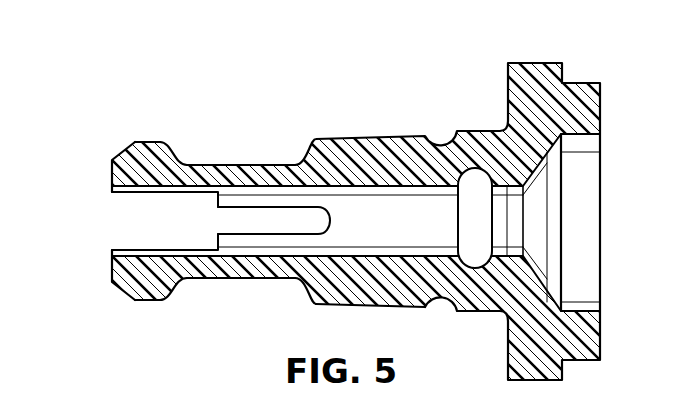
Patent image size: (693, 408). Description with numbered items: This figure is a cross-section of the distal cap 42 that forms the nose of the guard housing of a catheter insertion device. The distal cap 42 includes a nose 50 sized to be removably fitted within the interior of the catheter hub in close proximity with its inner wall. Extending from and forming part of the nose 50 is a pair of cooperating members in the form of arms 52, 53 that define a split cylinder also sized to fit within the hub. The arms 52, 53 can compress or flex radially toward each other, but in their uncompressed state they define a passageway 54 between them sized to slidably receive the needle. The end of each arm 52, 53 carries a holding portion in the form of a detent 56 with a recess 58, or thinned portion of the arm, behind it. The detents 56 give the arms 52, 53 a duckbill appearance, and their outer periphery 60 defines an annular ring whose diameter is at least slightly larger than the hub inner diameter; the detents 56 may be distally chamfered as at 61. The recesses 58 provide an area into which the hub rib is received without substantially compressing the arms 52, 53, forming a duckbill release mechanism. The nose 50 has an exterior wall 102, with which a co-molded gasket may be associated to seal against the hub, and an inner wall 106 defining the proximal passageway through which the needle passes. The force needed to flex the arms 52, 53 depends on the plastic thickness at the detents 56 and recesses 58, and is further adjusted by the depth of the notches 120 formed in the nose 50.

The distal cap 42 is at (451, 92).
The nose 50 is at (324, 124).
The arm 52 is at (188, 164).
The arm 53 is at (183, 288).
The passageway 54 is at (154, 233).
The detent 56 is at (143, 148).
The recess 58 is at (233, 165).
The outer periphery 60 is at (152, 142).
The chamfer 61 is at (130, 141).
The exterior wall 102 is at (382, 307).
The inner wall 106 is at (394, 256).
The notch 120 is at (332, 223).